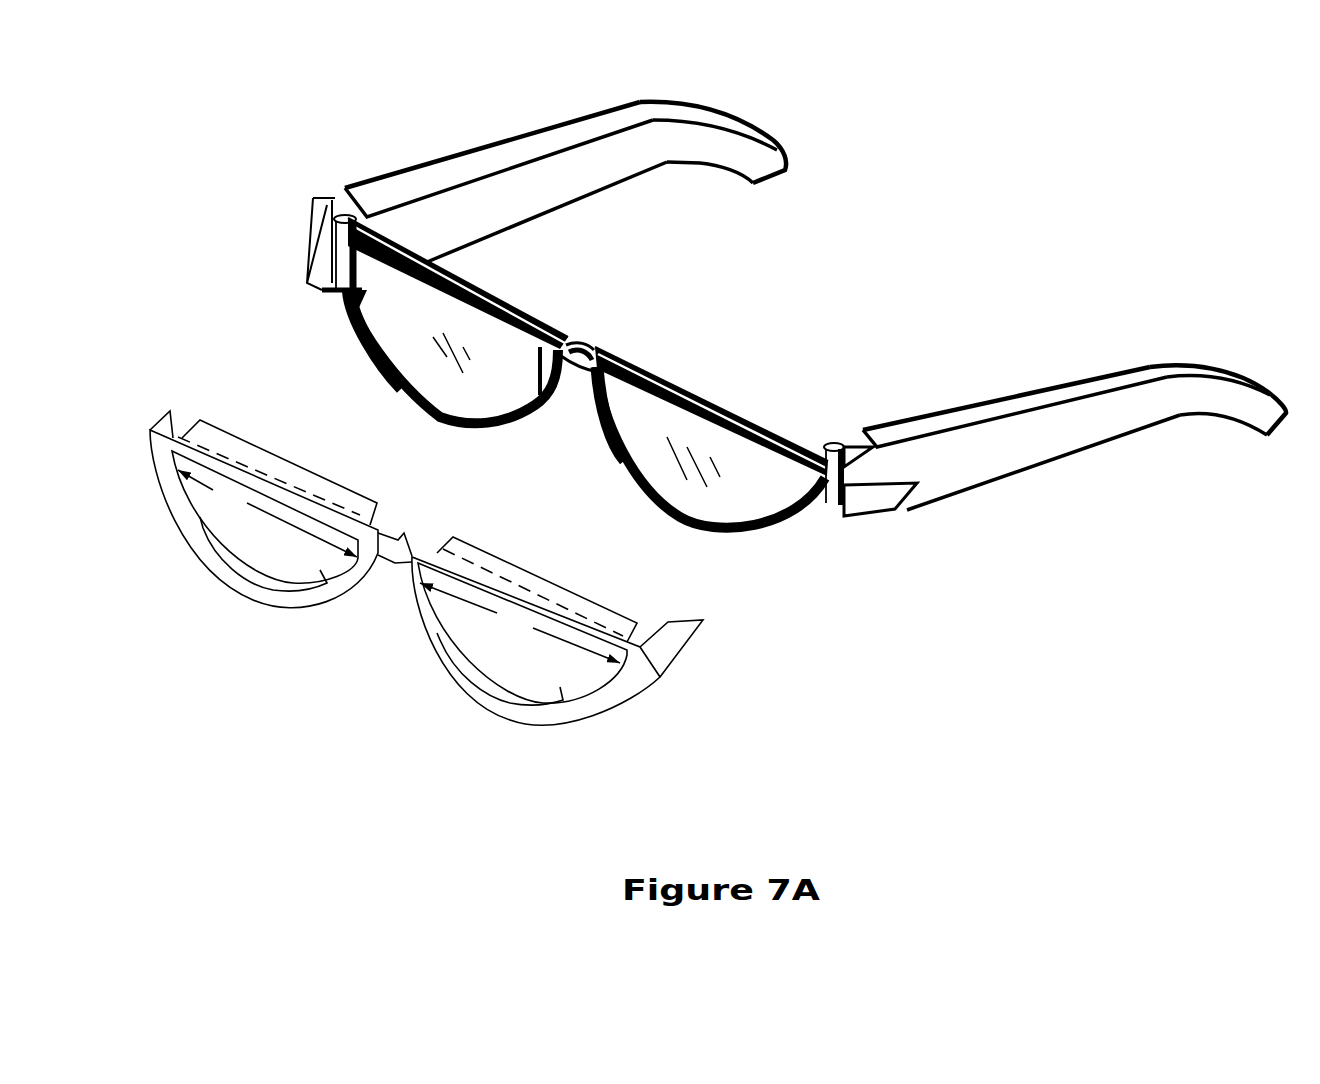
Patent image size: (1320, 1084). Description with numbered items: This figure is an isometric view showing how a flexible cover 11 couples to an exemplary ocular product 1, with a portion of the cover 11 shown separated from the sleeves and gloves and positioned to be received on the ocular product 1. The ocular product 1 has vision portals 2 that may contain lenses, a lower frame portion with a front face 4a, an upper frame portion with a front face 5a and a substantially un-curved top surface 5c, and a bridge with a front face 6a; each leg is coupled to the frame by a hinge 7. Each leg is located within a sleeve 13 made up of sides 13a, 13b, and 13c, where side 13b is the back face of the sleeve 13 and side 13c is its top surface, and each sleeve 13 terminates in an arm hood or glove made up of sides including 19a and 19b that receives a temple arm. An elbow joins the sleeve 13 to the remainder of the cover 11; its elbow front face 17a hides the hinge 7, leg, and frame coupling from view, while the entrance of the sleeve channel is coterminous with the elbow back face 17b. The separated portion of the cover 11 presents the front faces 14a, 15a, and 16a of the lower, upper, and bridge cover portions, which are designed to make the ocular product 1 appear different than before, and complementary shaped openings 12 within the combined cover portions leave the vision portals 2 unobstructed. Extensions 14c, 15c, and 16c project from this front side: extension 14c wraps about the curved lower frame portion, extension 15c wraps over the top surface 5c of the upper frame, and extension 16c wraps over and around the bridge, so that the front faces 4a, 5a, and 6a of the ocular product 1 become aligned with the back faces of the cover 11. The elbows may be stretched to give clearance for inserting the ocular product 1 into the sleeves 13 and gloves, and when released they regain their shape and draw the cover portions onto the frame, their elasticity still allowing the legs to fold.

The ocular product 1 is at (749, 296).
The vision portals 2 is at (576, 410).
The front face of lower frame portion 4a is at (355, 298).
The front face of upper frame portion 5a is at (587, 369).
The top surface of upper frame portion 5c is at (520, 311).
The front face of bridge 6a is at (582, 348).
The hinge 7 is at (345, 214).
The cover 11 is at (710, 563).
The openings 12 is at (399, 566).
The sleeve 13 is at (813, 287).
The side of sleeve 13a is at (1043, 462).
The back face of sleeve 13b is at (547, 212).
The top surface of sleeve 13c is at (970, 410).
The front face of lower cover portion 14a is at (226, 594).
The extension of lower cover portion 14c is at (240, 569).
The front face of upper cover portion 15a is at (247, 477).
The extension of upper cover portion 15c is at (279, 467).
The front face of bridge cover portion 16a is at (385, 571).
The extension of bridge cover portion 16c is at (403, 537).
The elbow front face 17a is at (150, 427).
The back face of elbow 17b is at (309, 238).
The side of glove 19a is at (1218, 400).
The side of glove 19b is at (713, 142).